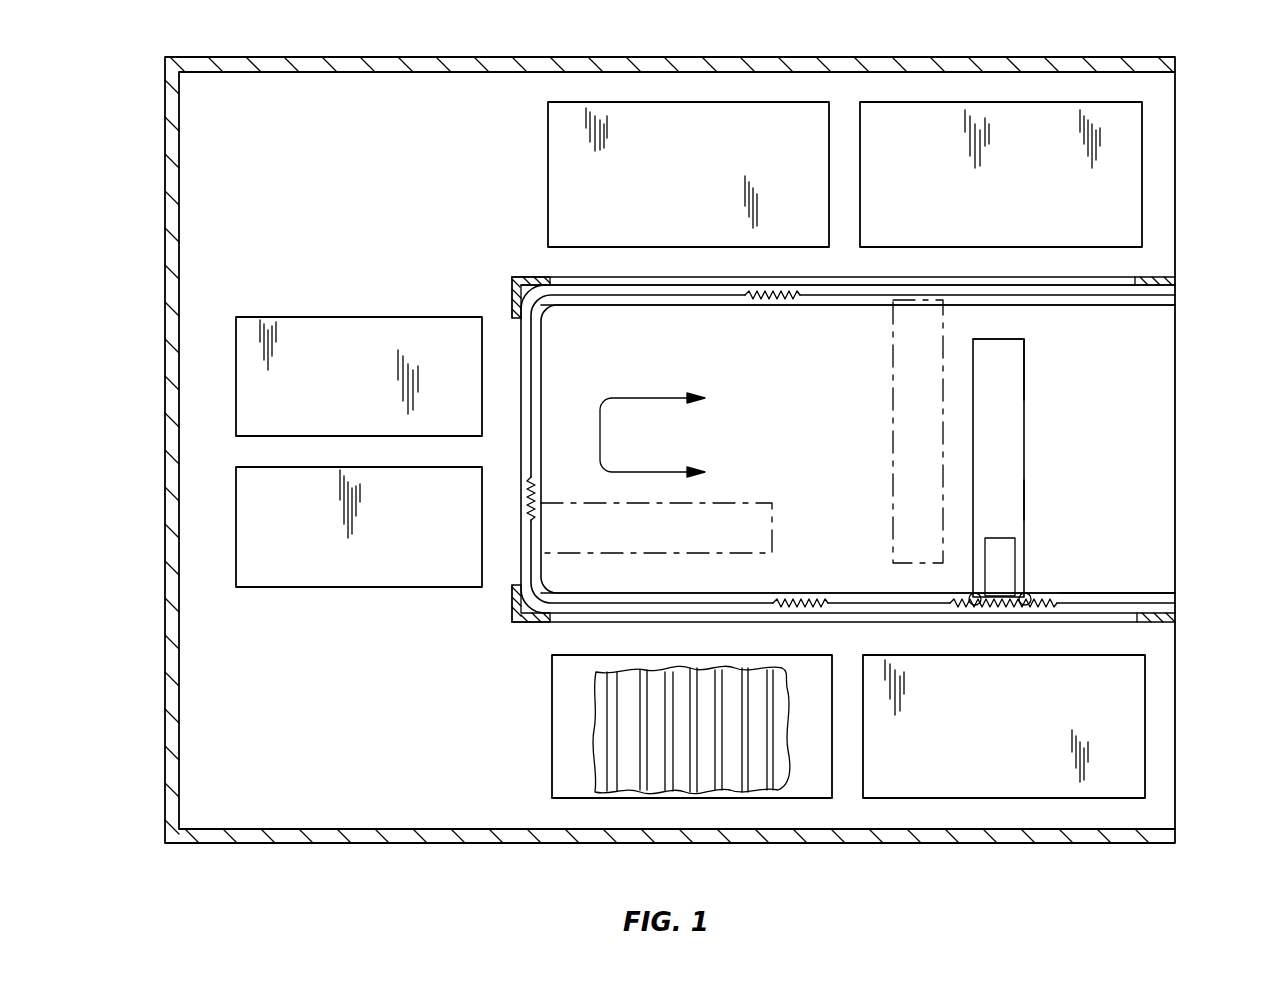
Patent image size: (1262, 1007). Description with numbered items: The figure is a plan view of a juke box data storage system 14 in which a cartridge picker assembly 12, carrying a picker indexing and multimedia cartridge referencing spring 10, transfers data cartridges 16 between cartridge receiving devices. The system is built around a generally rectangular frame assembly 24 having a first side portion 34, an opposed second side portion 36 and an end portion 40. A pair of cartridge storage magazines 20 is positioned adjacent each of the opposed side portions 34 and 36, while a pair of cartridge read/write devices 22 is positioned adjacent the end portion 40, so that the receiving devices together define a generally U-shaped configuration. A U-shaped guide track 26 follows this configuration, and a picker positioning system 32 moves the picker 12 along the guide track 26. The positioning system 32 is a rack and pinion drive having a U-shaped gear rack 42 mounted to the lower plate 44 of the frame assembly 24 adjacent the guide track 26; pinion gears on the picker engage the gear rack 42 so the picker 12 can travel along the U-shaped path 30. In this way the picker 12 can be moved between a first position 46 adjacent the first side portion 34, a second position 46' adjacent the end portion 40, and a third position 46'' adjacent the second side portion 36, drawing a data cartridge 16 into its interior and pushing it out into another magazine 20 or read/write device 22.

The picker indexing and multimedia cartridge referencing spring 10 is at (1032, 500).
The cartridge picker assembly 12 is at (1024, 418).
The data storage system 14 is at (280, 58).
The data cartridge 16 is at (1025, 798).
The cartridge storage magazine 20 is at (880, 102).
The cartridge read/write device 22 is at (262, 467).
The frame assembly 24 is at (1178, 393).
The U-shaped guide track 26 is at (541, 354).
The U-shaped path 30 is at (600, 435).
The picker positioning system 32 is at (1143, 593).
The first side portion 34 is at (1119, 622).
The second side portion 36 is at (1118, 277).
The end portion 40 is at (512, 606).
The U-shaped gear rack 42 is at (815, 600).
The lower plate 44 is at (764, 380).
The first position 46 is at (1036, 369).
The second position 46' is at (675, 507).
The third position 46'' is at (892, 431).